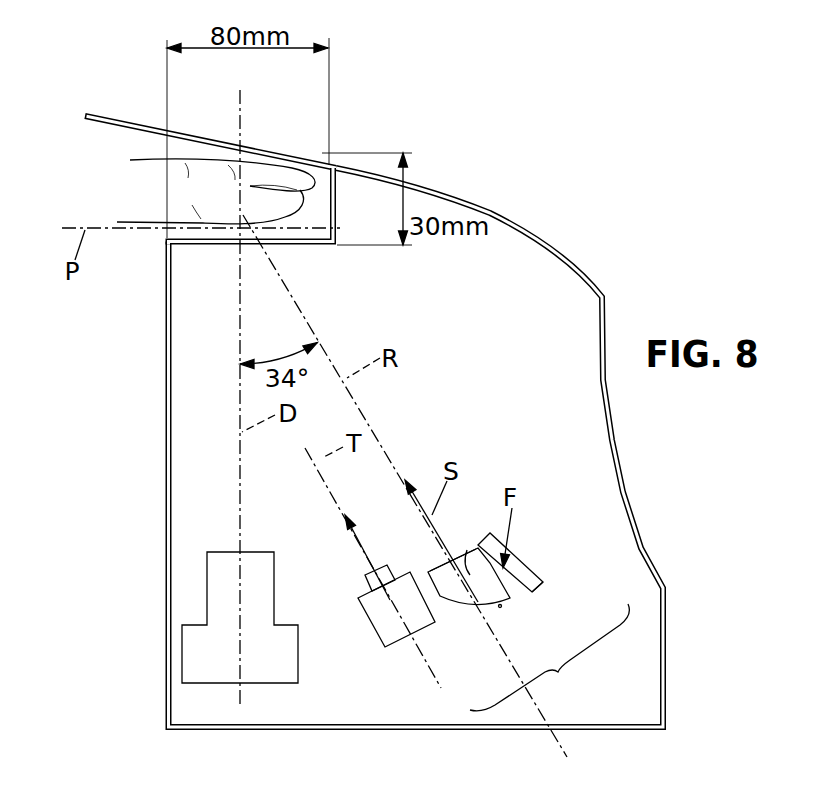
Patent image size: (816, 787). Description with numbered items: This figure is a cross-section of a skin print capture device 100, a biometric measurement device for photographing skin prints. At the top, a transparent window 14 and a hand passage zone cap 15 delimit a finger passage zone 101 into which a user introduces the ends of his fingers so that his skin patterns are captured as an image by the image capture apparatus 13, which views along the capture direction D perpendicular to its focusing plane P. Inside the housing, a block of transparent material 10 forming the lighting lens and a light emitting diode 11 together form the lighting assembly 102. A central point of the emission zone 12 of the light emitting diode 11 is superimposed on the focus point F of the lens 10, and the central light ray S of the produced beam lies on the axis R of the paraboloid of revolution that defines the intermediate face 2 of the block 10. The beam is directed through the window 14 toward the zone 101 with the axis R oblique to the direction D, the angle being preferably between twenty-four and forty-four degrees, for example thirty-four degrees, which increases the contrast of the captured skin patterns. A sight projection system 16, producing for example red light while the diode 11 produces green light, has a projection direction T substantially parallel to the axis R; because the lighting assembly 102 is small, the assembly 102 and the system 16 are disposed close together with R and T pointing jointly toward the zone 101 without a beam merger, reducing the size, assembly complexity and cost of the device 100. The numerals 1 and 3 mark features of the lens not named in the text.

The sensor unit 1 is at (486, 574).
The intermediate face 2 is at (506, 615).
The sensing surface 3 is at (430, 559).
The block of transparent material forming the lighting lens 10 is at (457, 585).
The light emitting diode 11 is at (537, 567).
The emission zone of the light emitting diode 12 is at (517, 552).
The image capture apparatus 13 is at (288, 648).
The transparent window 14 is at (213, 247).
The hand passage zone cap 15 is at (110, 119).
The sight projection system 16 is at (393, 633).
The skin print capture device 100 is at (560, 158).
The finger passage zone 101 is at (150, 146).
The lighting assembly 102 is at (549, 657).